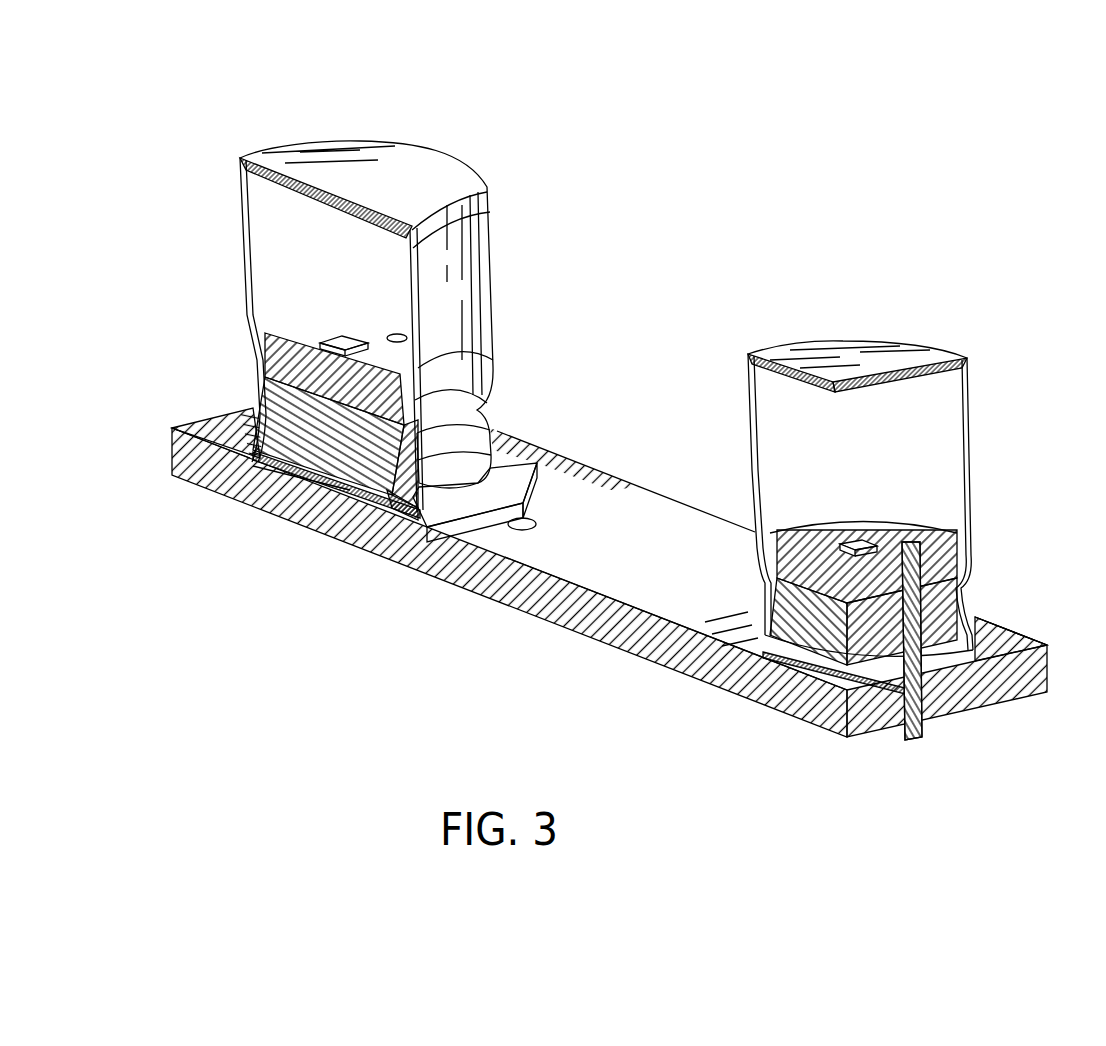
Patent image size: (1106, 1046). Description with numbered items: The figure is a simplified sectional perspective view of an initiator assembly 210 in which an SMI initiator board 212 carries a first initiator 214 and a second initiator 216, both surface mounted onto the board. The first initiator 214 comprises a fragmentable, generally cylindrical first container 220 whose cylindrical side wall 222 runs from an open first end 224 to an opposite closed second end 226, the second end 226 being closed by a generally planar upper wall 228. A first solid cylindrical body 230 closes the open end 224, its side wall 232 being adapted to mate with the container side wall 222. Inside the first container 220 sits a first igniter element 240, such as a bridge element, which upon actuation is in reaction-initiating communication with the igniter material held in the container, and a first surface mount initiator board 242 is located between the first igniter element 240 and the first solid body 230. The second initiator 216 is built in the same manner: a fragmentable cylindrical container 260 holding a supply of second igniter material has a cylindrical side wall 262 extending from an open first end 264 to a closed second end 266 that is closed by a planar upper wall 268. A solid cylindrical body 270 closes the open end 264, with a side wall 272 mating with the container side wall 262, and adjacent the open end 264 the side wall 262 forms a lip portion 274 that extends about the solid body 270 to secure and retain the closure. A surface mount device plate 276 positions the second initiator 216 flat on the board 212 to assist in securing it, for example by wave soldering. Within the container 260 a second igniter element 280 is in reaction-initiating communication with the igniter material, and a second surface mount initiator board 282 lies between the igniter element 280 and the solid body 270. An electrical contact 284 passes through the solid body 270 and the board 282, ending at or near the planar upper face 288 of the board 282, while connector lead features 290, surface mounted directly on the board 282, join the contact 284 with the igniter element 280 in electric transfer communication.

The initiator assembly 210 is at (957, 235).
The SMI initiator board 212 is at (570, 660).
The first initiator 214 is at (708, 398).
The second initiator 216 is at (408, 137).
The first container 220 is at (843, 353).
The side wall 222 is at (975, 455).
The open first end 224 is at (808, 686).
The closed second end 226 is at (913, 353).
The upper wall 228 is at (790, 347).
The first solid cylindrical body 230 is at (983, 688).
The side wall 232 is at (960, 592).
The first igniter element 240 is at (847, 540).
The first surface mount initiator board 242 is at (772, 550).
The container 260 is at (323, 177).
The side wall 262 is at (448, 285).
The open first end 264 is at (310, 500).
The closed second end 266 is at (447, 170).
The upper wall 268 is at (447, 197).
The solid cylindrical body 270 is at (240, 498).
The side wall 272 is at (490, 430).
The lip portion 274 is at (402, 525).
The surface mount device (SMD) plate 276 is at (515, 508).
The second igniter element 280 is at (322, 340).
The second surface mount initiator board 282 is at (268, 357).
The first electrical contact 284 is at (397, 338).
The upper face 288 is at (403, 372).
The connector lead features 290 is at (372, 524).